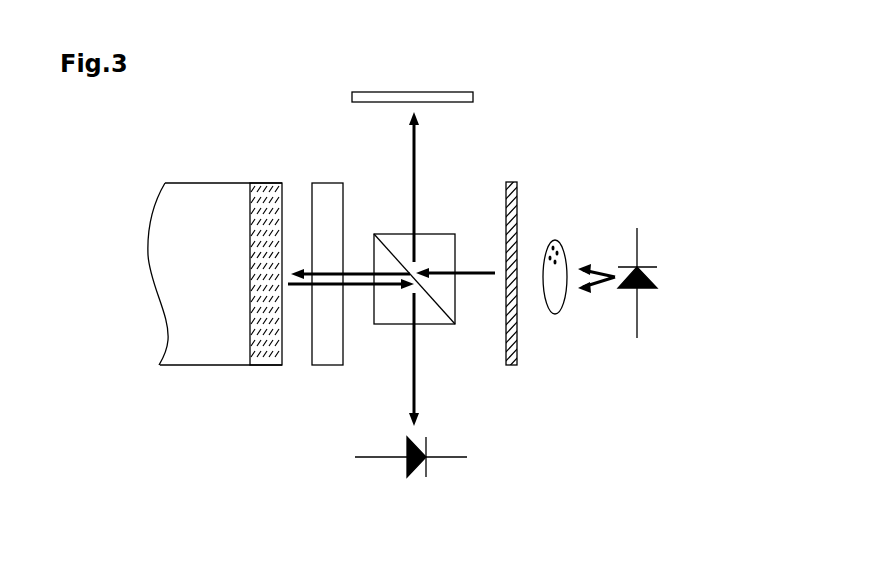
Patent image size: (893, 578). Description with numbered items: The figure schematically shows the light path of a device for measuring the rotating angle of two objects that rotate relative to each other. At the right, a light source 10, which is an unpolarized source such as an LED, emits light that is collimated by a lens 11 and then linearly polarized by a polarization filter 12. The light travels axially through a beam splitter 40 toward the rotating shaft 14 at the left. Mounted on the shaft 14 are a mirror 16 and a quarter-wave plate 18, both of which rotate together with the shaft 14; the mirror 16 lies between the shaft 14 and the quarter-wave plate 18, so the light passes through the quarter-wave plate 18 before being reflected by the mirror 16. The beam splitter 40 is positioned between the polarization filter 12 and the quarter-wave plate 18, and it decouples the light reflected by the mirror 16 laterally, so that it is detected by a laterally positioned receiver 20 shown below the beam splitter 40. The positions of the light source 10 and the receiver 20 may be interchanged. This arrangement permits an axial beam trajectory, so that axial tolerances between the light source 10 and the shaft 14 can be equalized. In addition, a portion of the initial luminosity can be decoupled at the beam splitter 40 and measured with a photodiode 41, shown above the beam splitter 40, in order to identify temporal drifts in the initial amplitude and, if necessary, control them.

The light source 10 is at (668, 282).
The lens 11 is at (556, 303).
The polarization filter 12 is at (511, 182).
The rotating shaft 14 is at (198, 205).
The mirror 16 is at (260, 190).
The λ/4 plate 18 is at (332, 190).
The receiver 20 is at (418, 470).
The beam splitter 40 is at (434, 242).
The photodiode 41 is at (452, 92).